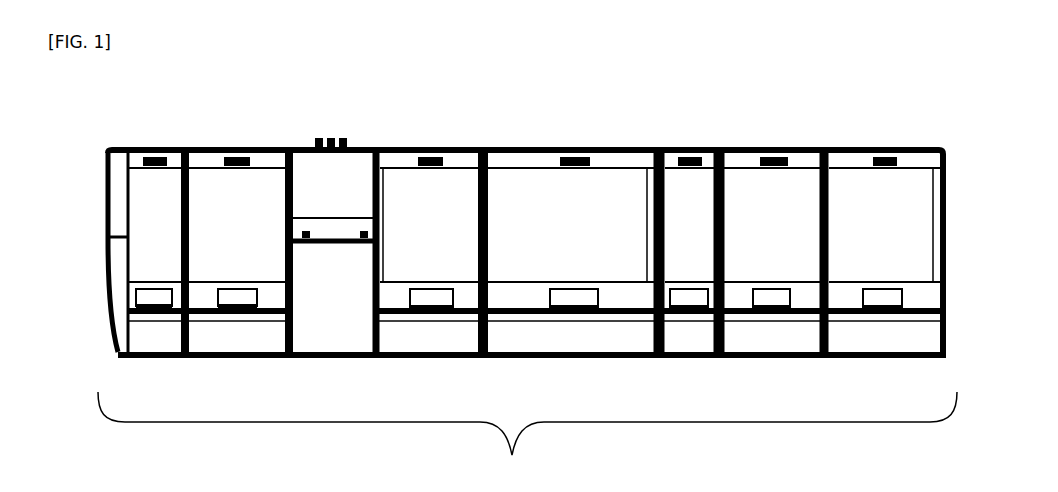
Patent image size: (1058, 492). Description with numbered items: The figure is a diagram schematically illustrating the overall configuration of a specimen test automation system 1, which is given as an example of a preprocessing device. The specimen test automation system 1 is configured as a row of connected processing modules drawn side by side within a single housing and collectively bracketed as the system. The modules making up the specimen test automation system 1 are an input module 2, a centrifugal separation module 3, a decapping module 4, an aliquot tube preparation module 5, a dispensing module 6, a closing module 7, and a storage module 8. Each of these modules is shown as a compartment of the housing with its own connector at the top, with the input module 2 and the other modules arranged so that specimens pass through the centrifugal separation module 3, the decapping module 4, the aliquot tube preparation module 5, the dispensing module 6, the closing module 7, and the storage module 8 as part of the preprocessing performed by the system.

The specimen test automation system 1 is at (527, 313).
The input module 2 is at (432, 150).
The centrifugal separation module 3 is at (570, 150).
The decapping module 4 is at (688, 150).
The aliquot tube preparation module 5 is at (777, 150).
The dispensing module 6 is at (884, 150).
The closing module 7 is at (154, 150).
The storage module 8 is at (238, 150).